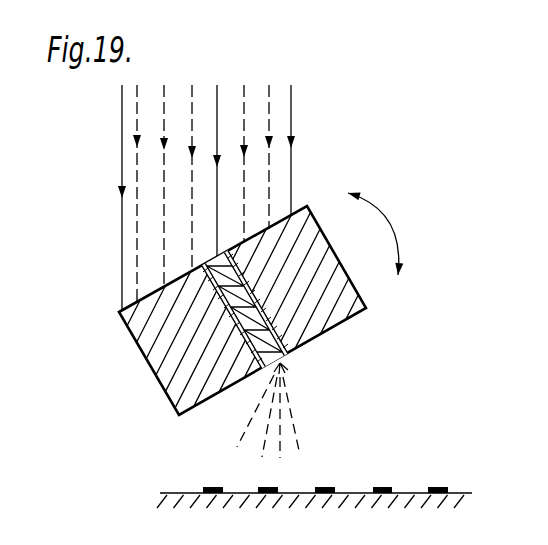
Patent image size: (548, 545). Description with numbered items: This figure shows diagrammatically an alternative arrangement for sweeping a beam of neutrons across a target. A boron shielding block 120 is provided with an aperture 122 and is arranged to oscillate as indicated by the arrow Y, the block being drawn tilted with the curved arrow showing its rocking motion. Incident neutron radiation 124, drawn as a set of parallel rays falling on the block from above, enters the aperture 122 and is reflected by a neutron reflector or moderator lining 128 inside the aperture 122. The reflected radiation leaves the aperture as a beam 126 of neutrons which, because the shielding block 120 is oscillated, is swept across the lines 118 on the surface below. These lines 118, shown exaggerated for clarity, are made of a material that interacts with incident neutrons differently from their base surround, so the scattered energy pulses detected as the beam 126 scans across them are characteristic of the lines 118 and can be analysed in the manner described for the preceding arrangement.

The lines 118 is at (437, 488).
The boron shielding block 120 is at (125, 318).
The aperture 122 is at (282, 363).
The incident neutron radiation 124 is at (292, 163).
The beam of neutrons 126 is at (302, 430).
The neutron reflector or moderator lining 128 is at (265, 372).
The arrow Y is at (390, 230).